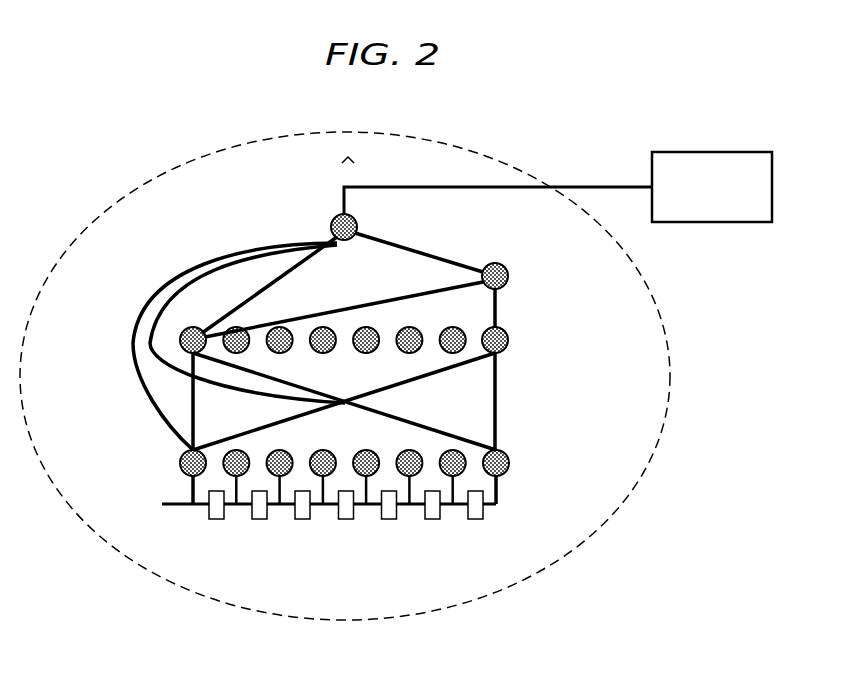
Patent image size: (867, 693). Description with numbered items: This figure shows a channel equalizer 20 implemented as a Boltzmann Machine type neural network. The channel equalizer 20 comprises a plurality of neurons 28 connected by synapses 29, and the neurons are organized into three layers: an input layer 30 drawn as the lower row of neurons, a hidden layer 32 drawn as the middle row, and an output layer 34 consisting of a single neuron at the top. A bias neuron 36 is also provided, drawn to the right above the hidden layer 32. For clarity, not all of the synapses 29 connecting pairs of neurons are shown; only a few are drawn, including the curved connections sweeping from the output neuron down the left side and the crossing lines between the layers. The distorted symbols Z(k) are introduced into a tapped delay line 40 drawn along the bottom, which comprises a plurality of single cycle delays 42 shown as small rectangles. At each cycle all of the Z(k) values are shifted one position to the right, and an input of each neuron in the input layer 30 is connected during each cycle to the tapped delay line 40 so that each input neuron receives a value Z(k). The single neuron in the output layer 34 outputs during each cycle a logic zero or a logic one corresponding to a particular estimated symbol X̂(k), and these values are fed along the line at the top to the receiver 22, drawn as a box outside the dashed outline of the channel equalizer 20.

The channel equalizer 20 is at (173, 594).
The receiver 22 is at (700, 152).
The neurons 28 is at (354, 330).
The synapses 29 is at (188, 276).
The input layer 30 is at (509, 463).
The hidden layer 32 is at (508, 341).
The output layer 34 is at (357, 232).
The bias neuron 36 is at (508, 276).
The tapped delay line 40 is at (367, 524).
The single cycle delays 42 is at (263, 528).